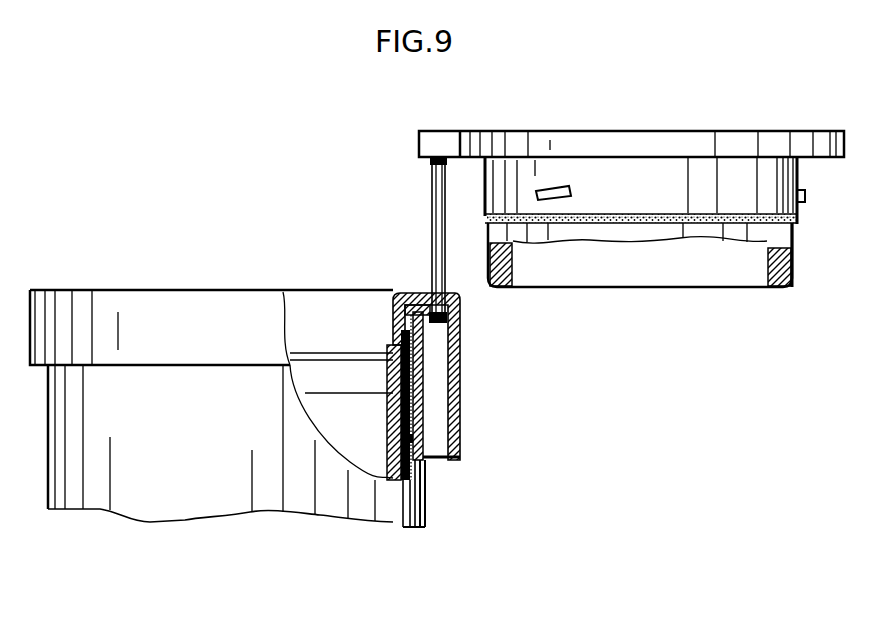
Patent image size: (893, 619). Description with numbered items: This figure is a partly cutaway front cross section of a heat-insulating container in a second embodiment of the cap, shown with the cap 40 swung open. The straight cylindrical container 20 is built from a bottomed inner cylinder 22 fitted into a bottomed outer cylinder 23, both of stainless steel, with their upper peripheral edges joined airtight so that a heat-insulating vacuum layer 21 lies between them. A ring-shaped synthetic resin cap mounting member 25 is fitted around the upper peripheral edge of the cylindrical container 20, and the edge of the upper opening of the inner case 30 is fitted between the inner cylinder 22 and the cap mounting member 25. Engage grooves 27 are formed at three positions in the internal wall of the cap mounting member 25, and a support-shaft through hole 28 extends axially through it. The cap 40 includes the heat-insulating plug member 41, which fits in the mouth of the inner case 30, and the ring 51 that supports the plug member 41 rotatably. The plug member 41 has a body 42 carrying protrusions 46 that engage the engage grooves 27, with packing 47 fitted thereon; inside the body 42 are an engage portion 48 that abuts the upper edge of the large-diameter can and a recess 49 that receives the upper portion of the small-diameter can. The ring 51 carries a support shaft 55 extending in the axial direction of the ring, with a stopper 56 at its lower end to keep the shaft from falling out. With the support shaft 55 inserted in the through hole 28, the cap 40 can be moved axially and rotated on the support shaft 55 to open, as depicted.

The cylindrical container 20 is at (426, 538).
The heat-insulating vacuum layer 21 is at (409, 469).
The inner cylinder 22 is at (422, 514).
The outer cylinder 23 is at (450, 451).
The cap mounting member 25 is at (92, 280).
The engage grooves 27 is at (393, 343).
The support-shaft through hole 28 is at (440, 378).
The inner case 30 is at (427, 438).
The cap 40 is at (660, 124).
The plug member 41 is at (483, 177).
The body 42 is at (793, 240).
The protrusions 46 is at (560, 187).
The packing 47 is at (638, 228).
The engage portion 48 is at (499, 290).
The recess 49 is at (764, 268).
The ring 51 is at (751, 136).
The support shaft 55 is at (436, 223).
The stopper 56 is at (430, 306).